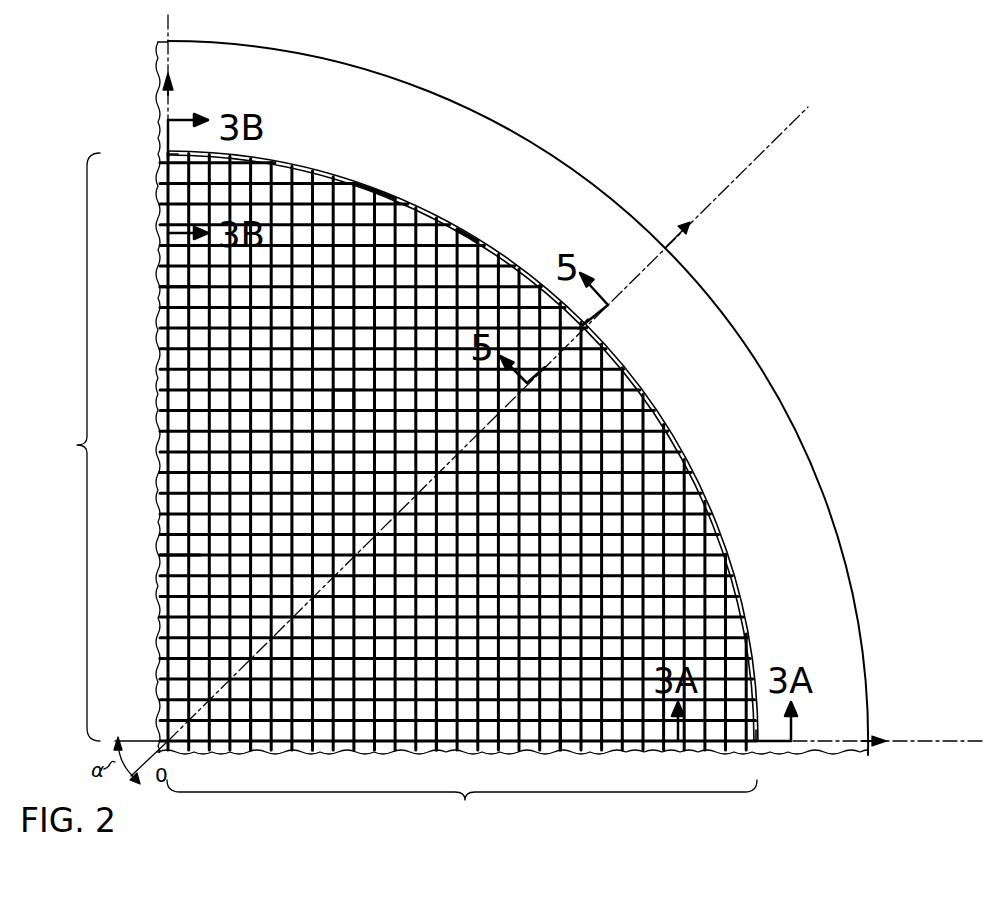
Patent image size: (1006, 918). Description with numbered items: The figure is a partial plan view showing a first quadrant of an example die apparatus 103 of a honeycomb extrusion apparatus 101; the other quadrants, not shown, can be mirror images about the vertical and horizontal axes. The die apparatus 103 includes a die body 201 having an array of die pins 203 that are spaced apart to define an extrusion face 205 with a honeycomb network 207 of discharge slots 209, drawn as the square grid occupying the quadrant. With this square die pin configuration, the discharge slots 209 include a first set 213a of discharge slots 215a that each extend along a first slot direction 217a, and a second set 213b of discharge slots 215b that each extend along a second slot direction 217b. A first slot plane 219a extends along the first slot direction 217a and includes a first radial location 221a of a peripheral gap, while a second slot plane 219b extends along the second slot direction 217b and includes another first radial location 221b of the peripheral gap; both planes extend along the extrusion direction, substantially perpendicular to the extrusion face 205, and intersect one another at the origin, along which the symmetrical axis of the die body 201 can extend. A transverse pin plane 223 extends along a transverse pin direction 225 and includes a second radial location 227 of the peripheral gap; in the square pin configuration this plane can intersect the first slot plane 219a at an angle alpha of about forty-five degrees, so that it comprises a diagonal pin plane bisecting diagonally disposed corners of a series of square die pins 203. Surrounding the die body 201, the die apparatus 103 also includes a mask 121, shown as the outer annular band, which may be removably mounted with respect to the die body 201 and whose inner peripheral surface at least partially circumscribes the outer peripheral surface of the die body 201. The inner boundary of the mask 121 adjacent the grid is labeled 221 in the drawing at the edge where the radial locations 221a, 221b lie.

The honeycomb extrusion apparatus 101 is at (795, 227).
The die apparatus 103 is at (795, 383).
The mask 121 is at (373, 86).
The die body 201 is at (132, 705).
The die pins 203 is at (367, 218).
The extrusion face 205 is at (367, 444).
The honeycomb network 207 is at (467, 257).
The discharge slots 209 is at (380, 233).
The first set of discharge slots 213a is at (462, 809).
The second set of discharge slots 213b is at (61, 447).
The discharge slots of the first set 215a is at (240, 744).
The discharge slots of the second set 215b is at (160, 300).
The first slot direction 217a is at (880, 745).
The second slot direction 217b is at (175, 88).
The first slot plane 219a is at (940, 743).
The second slot plane 219b is at (168, 30).
The inner wall 221 is at (715, 523).
The first radial location 221a is at (755, 745).
The first radial location 221b is at (162, 157).
The transverse pin plane 223 is at (792, 123).
The transverse pin direction 225 is at (672, 237).
The second radial location 227 is at (590, 326).